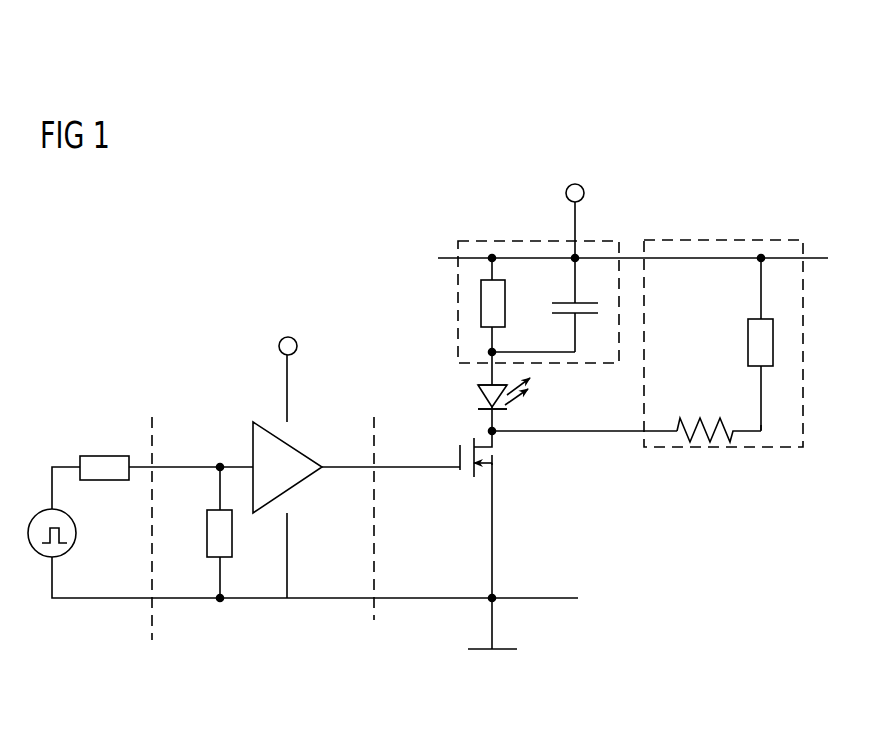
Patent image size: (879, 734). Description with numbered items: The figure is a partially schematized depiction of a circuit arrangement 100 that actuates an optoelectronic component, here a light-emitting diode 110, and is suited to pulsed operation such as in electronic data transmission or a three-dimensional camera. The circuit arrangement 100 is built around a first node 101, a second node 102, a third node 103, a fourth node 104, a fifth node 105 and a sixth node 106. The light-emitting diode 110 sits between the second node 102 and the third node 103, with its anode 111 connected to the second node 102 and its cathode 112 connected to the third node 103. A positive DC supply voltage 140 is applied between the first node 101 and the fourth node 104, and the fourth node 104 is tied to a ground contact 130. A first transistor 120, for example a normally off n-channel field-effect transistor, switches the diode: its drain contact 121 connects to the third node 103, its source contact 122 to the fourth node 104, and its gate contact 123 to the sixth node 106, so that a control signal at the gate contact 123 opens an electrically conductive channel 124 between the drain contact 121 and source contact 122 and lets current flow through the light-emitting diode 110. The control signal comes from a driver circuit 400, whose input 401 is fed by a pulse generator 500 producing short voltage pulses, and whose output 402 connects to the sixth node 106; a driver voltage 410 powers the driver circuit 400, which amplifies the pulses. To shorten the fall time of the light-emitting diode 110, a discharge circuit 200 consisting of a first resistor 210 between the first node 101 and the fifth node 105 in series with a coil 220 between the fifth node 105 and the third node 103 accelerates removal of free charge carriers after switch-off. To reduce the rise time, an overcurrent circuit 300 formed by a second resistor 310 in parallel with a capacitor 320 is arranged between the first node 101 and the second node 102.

The circuit arrangement 100 is at (189, 255).
The first node 101 is at (761, 256).
The second node 102 is at (490, 352).
The third node 103 is at (495, 434).
The fourth node 104 is at (495, 602).
The fifth node 105 is at (763, 432).
The sixth node 106 is at (378, 466).
The light-emitting diode 110 is at (478, 405).
The anode 111 is at (478, 385).
The cathode 112 is at (500, 412).
The first transistor 120 is at (462, 468).
The drain contact 121 is at (490, 457).
The source contact 122 is at (495, 482).
The gate contact 123 is at (404, 468).
The electrically conductive channel 124 is at (471, 475).
The ground contact 130 is at (505, 652).
The supply voltage 140 is at (585, 193).
The discharge circuit 200 is at (698, 240).
The first resistor 210 is at (748, 345).
The coil 220 is at (709, 440).
The overcurrent circuit 300 is at (457, 274).
The second resistor 310 is at (481, 308).
The capacitor 320 is at (560, 303).
The driver circuit 400 is at (232, 633).
The input 401 is at (156, 465).
The output 402 is at (372, 467).
The driver voltage 410 is at (279, 346).
The pulse generator 500 is at (86, 633).